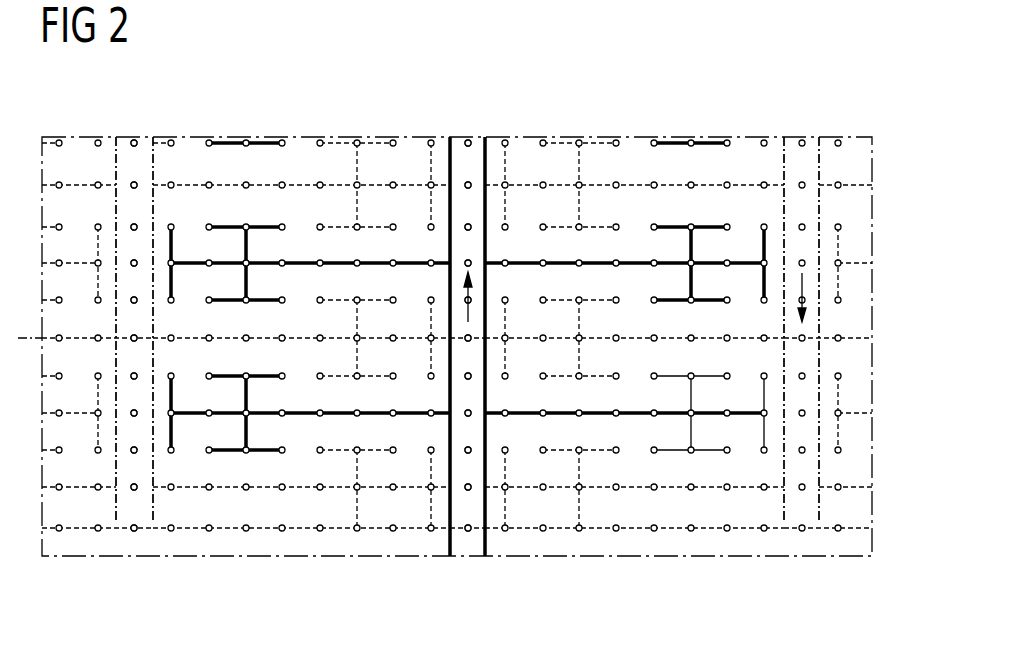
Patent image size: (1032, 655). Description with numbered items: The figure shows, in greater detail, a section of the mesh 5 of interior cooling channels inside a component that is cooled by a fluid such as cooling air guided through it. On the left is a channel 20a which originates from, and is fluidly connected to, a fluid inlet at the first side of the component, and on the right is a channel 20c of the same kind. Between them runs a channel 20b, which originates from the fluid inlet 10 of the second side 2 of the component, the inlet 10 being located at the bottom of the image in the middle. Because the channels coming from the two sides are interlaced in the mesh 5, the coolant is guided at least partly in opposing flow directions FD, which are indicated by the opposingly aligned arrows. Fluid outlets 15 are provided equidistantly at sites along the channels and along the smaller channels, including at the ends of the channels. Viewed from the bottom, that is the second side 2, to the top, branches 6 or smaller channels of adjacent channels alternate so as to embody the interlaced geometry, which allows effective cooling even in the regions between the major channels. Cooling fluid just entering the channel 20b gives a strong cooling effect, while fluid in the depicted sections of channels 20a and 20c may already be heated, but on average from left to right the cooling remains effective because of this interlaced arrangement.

The second side 2 is at (475, 348).
The mesh 5 is at (793, 160).
The branches 6 is at (577, 185).
The fluid inlet 10 is at (470, 556).
The fluid outlets 15 is at (135, 137).
The channel 20a is at (130, 505).
The channel 20b is at (473, 505).
The channel 20c is at (803, 467).
The flow directions FD is at (463, 292).